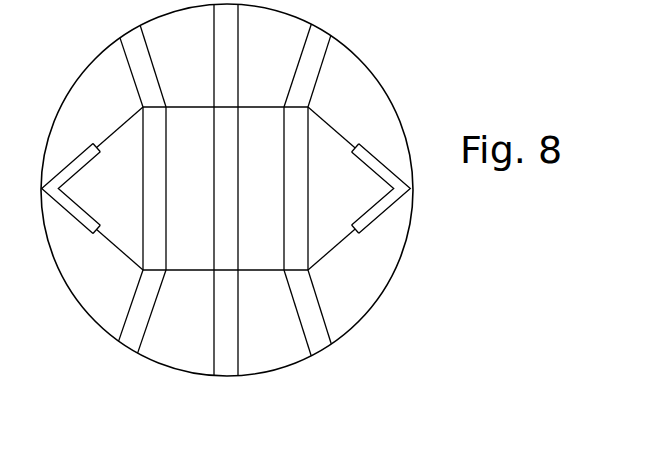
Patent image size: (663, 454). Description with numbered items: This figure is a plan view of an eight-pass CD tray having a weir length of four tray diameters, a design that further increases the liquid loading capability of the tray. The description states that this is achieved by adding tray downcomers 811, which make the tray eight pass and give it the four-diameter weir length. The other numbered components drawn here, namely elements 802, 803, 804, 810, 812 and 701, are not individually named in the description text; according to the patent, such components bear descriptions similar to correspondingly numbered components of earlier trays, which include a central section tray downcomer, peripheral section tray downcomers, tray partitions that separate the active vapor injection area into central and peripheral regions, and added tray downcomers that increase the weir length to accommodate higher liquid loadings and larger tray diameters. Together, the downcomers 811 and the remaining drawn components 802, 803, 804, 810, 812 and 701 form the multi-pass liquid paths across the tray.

The upper right arm 802 is at (321, 117).
The lower right strip 803 is at (238, 352).
The central strip 804 is at (239, 172).
The chevron tab 810 is at (71, 157).
The tray downcomer 811 is at (354, 53).
The lower left strip 812 is at (150, 312).
The sheet reference 701 is at (343, 448).